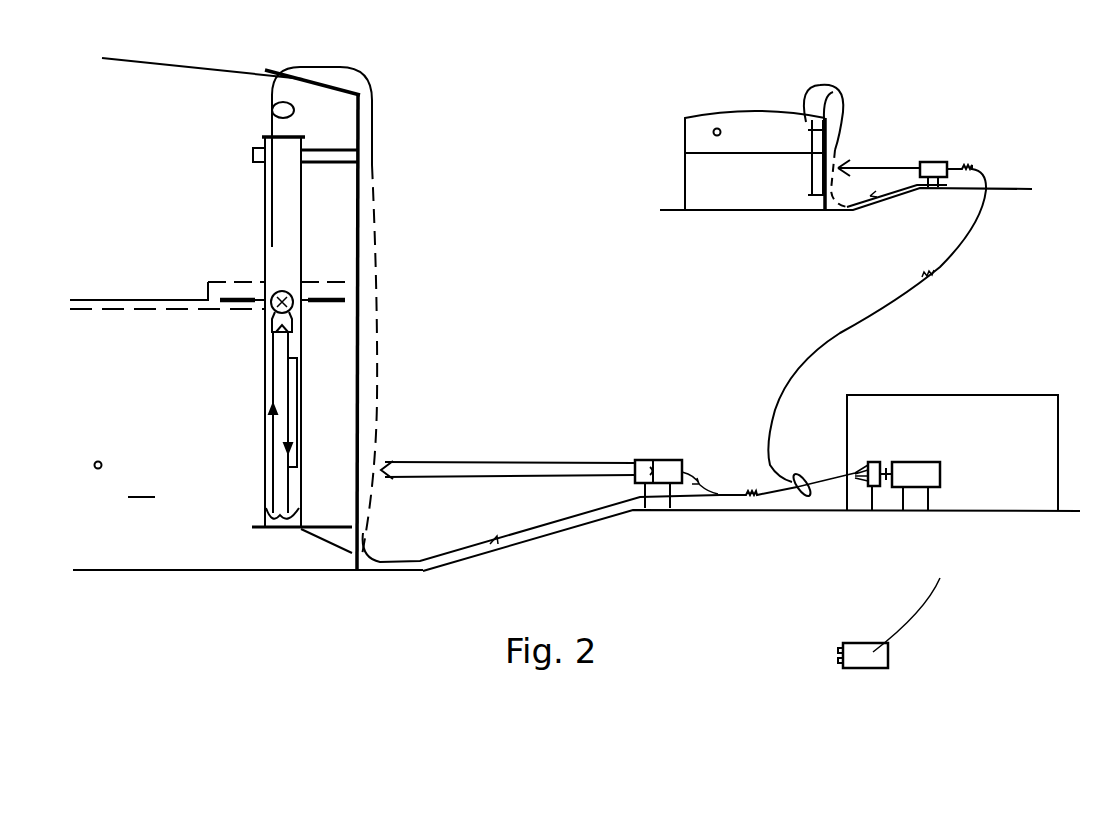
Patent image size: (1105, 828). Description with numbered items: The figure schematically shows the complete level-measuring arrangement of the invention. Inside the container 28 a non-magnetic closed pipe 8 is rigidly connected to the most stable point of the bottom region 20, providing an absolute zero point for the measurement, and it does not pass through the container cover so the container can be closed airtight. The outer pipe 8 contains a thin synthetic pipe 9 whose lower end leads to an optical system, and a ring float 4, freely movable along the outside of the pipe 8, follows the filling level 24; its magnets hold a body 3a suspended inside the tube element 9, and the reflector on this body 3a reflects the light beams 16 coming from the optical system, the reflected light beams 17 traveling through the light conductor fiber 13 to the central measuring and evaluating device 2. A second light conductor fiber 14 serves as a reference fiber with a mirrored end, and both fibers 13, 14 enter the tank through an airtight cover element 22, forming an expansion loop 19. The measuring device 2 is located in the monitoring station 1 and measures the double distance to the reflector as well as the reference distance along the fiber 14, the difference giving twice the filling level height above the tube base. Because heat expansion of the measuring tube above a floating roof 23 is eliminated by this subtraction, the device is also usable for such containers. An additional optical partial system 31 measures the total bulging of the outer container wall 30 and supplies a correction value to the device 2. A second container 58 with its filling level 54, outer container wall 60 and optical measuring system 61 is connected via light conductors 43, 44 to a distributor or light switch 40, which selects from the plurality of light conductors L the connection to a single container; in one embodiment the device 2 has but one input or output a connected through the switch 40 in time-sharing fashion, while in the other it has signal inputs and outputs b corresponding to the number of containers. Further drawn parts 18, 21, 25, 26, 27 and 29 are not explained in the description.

The monitoring station 1 is at (1026, 455).
The central measuring and evaluating device 2 is at (922, 477).
The suspended body 3a is at (278, 290).
The ring float 4 is at (337, 305).
The non-magnetic closed pipe 8 is at (301, 391).
The thin pipe of synthetic material 9 is at (297, 417).
The light conductor fiber 13 is at (368, 173).
The second light conductor fiber 14 is at (374, 203).
The light beams 16 is at (272, 392).
The reflected light beams 17 is at (287, 432).
The upper flange 18 is at (260, 137).
The expansion loop 19 is at (272, 97).
The bottom region 20 is at (335, 540).
The cross bar 21 is at (350, 152).
The cover element 22 is at (279, 74).
The floating roof 23 is at (122, 309).
The filling level 24 is at (106, 300).
The sheet 25 is at (226, 66).
The room 26 is at (144, 483).
The floor 27 is at (230, 573).
The container 28 is at (96, 469).
The conduit 29 is at (490, 552).
The outer container wall 30 is at (398, 464).
The additional optical partial system 31 is at (660, 460).
The light switch 40 is at (870, 490).
The light conductor 43 is at (803, 89).
The light conductor 44 is at (823, 85).
The filling level 54 is at (720, 155).
The container 58 is at (715, 128).
The outer container wall 60 is at (847, 163).
The optical measuring system 61 is at (939, 162).
The light conductor L is at (795, 498).
The input or output a is at (889, 467).
The signal inputs and signal outputs b is at (838, 656).